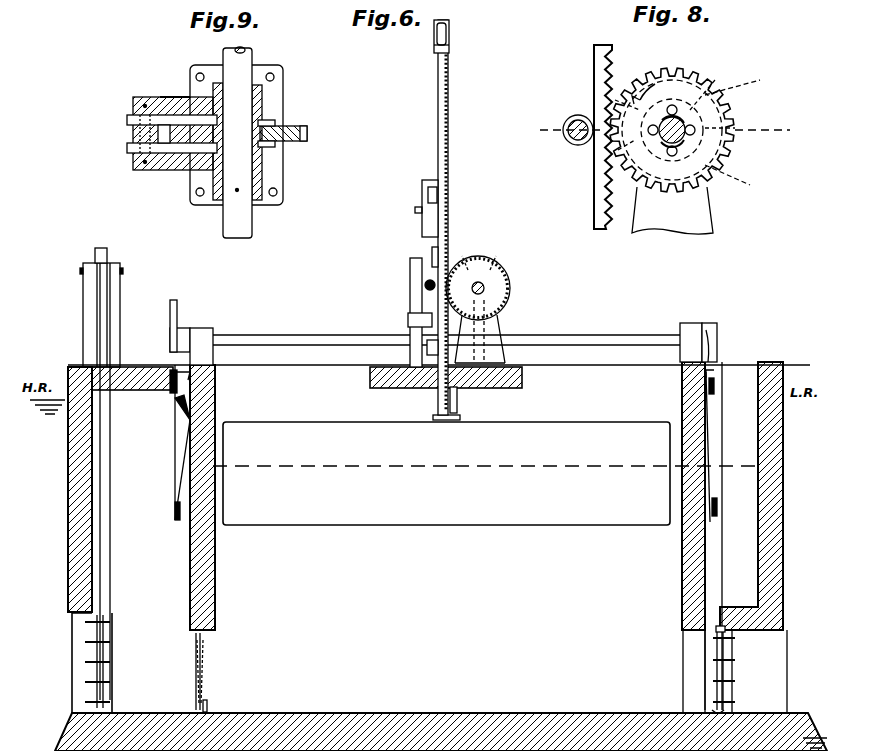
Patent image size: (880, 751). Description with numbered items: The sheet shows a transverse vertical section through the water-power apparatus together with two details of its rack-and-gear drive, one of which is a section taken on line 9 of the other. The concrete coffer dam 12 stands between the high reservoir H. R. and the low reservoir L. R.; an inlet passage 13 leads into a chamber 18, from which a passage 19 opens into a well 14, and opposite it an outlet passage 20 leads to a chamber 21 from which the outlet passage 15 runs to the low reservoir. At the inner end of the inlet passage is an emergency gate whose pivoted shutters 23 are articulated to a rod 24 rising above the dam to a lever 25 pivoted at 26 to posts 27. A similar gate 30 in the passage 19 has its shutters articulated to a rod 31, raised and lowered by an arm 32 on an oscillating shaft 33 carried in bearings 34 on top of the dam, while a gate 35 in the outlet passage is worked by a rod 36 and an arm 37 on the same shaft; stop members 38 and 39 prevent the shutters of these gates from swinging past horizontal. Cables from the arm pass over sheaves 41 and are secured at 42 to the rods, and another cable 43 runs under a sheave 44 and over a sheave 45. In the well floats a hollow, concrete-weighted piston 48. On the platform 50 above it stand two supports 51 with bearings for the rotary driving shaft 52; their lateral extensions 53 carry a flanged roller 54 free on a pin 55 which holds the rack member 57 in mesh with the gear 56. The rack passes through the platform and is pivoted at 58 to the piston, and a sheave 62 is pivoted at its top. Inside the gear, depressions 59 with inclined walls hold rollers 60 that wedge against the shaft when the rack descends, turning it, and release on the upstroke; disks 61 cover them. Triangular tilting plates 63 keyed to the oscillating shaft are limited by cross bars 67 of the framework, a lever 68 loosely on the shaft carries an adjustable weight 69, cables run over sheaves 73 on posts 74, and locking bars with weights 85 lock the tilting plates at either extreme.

In FIG. 8, the section line 9 9 is at (656, 130).
In FIG. 6, the coffer dam 12 is at (140, 360).
In FIG. 6, the inlet passage 13 is at (72, 648).
In FIG. 6, the well 14 is at (441, 701).
In FIG. 6, the outlet passage 15 is at (775, 643).
In FIG. 6, the chamber 18 is at (80, 510).
In FIG. 6, the passage 19 is at (217, 650).
In FIG. 6, the outlet passage 20 is at (683, 665).
In FIG. 6, the chamber 21 is at (765, 527).
In FIG. 6, the shutters 23 is at (110, 620).
In FIG. 6, the rod 24 is at (111, 550).
In FIG. 6, the lever 25 is at (100, 250).
In FIG. 6, the pivot 26 is at (124, 272).
In FIG. 6, the posts 27 is at (83, 312).
In FIG. 6, the gate 30 is at (205, 676).
In FIG. 6, the rod 31 is at (190, 580).
In FIG. 6, the arm 32 is at (178, 305).
In FIG. 6, the oscillating shaft 33 is at (300, 328).
In FIG. 6, the bearings 34 is at (200, 330).
In FIG. 6, the gate 35 is at (733, 670).
In FIG. 6, the rod 36 is at (722, 550).
In FIG. 6, the arm 37 is at (718, 348).
In FIG. 6, the stop member 38 is at (210, 705).
In FIG. 6, the stop member 39 is at (718, 626).
In FIG. 6, the sheaves 41 is at (192, 377).
In FIG. 6, the cable securing point 42 is at (188, 418).
In FIG. 6, the cable 43 is at (175, 456).
In FIG. 6, the sheave 44 is at (175, 512).
In FIG. 6, the sheave 45 is at (175, 395).
In FIG. 6, the piston 48 is at (472, 525).
In FIG. 6, the platform 50 is at (515, 372).
In FIG. 9, the supports 51 is at (275, 88).
In FIG. 8, the supports 51 is at (700, 218).
In FIG. 6, the supports 51 is at (495, 335).
In FIG. 9, the rotary driving shaft 52 is at (243, 60).
In FIG. 8, the rotary driving shaft 52 is at (690, 140).
In FIG. 6, the rotary driving shaft 52 is at (482, 282).
In FIG. 9, the lateral extensions 53 is at (183, 97).
In FIG. 8, the lateral extensions 53 is at (621, 80).
In FIG. 6, the lateral extensions 53 is at (467, 268).
In FIG. 9, the flanged roller 54 is at (128, 135).
In FIG. 8, the flanged roller 54 is at (572, 140).
In FIG. 6, the flanged roller 54 is at (425, 287).
In FIG. 9, the pin 55 is at (143, 100).
In FIG. 8, the pin 55 is at (572, 116).
In FIG. 9, the gear 56 is at (308, 133).
In FIG. 8, the gear 56 is at (722, 90).
In FIG. 6, the gear 56 is at (510, 275).
In FIG. 9, the rack member 57 is at (172, 97).
In FIG. 8, the rack member 57 is at (592, 72).
In FIG. 6, the rack member 57 is at (449, 105).
In FIG. 6, the pivotal connection 58 is at (440, 411).
In FIG. 8, the depressions 59 is at (690, 115).
In FIG. 9, the rollers 60 is at (265, 165).
In FIG. 8, the rollers 60 is at (673, 106).
In FIG. 9, the disks 61 is at (276, 122).
In FIG. 8, the disks 61 is at (703, 80).
In FIG. 6, the sheave 62 is at (450, 33).
In FIG. 6, the triangular plates 63 is at (427, 347).
In FIG. 6, the cross bars 67 is at (408, 320).
In FIG. 6, the lever 68 is at (430, 188).
In FIG. 6, the weight 69 is at (422, 191).
In FIG. 6, the sheaves 73 is at (432, 252).
In FIG. 6, the posts 74 is at (410, 300).
In FIG. 6, the weights 85 is at (457, 399).